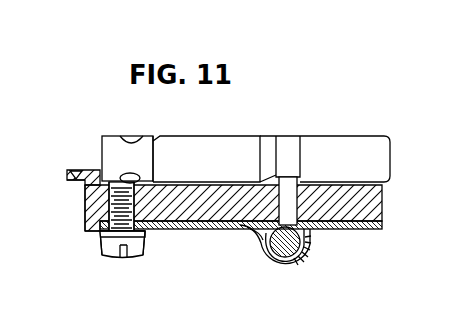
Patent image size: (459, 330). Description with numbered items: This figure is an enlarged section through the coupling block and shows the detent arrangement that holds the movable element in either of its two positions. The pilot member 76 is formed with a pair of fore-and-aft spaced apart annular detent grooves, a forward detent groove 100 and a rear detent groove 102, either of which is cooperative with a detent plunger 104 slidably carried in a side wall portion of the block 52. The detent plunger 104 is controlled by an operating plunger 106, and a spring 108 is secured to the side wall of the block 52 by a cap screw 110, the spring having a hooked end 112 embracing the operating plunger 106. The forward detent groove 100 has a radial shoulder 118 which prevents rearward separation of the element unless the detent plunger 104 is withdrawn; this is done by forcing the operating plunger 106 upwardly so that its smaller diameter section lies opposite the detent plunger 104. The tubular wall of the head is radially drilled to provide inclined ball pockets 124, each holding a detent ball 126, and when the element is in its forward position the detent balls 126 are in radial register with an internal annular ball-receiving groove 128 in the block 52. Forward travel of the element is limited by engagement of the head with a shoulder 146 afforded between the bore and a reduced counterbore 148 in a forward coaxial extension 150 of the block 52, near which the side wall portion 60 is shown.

The block 52 is at (371, 222).
The block 60 is at (86, 214).
The pilot member 76 is at (386, 162).
The forward detent groove 100 is at (170, 136).
The rear detent groove 102 is at (290, 136).
The detent plunger 104 is at (292, 178).
The operating plunger 106 is at (291, 259).
The spring 108 is at (205, 230).
The cap screw 110 is at (132, 256).
The hooked end 112 is at (311, 252).
The radial shoulder 118 is at (162, 126).
The ball pocket 124 is at (128, 174).
The detent ball 126 is at (143, 173).
The ball-receiving groove 128 is at (136, 190).
The shoulder 146 is at (86, 196).
The reduced counterbore 148 is at (76, 170).
The forward coaxial extension 150 is at (73, 182).